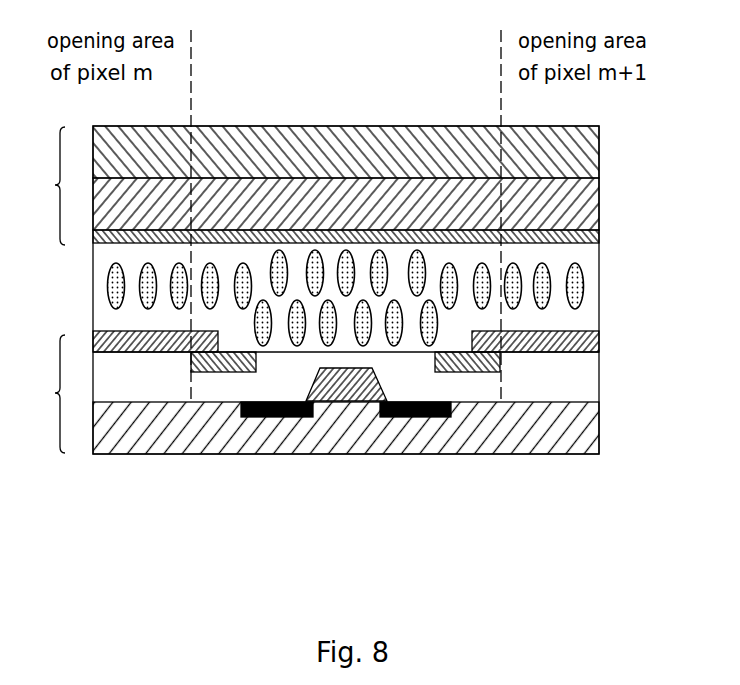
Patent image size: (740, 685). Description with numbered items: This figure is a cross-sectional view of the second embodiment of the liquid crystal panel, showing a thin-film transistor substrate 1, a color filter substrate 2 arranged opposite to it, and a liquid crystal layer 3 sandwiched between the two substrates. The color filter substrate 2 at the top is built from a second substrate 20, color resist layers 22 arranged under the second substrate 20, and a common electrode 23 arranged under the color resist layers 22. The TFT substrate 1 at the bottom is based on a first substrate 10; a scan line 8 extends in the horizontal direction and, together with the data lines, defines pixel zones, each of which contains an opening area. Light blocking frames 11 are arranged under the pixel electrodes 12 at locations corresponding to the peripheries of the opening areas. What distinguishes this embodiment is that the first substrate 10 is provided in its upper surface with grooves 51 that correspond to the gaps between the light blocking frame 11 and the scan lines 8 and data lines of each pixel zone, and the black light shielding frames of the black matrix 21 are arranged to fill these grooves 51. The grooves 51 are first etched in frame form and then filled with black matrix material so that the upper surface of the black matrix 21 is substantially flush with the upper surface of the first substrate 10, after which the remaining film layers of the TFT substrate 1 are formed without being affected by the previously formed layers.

The thin-film transistor substrate 1 is at (50, 394).
The color filter substrate 2 is at (50, 186).
The liquid crystal layer 3 is at (110, 294).
The scan line 8 is at (345, 392).
The first substrate 10 is at (583, 428).
The light blocking frame 11 is at (500, 362).
The pixel electrode 12 is at (598, 339).
The second substrate 20 is at (598, 153).
The black matrix 21 is at (267, 417).
The color resist layer 22 is at (598, 210).
The common electrode 23 is at (598, 243).
The groove 51 is at (452, 413).